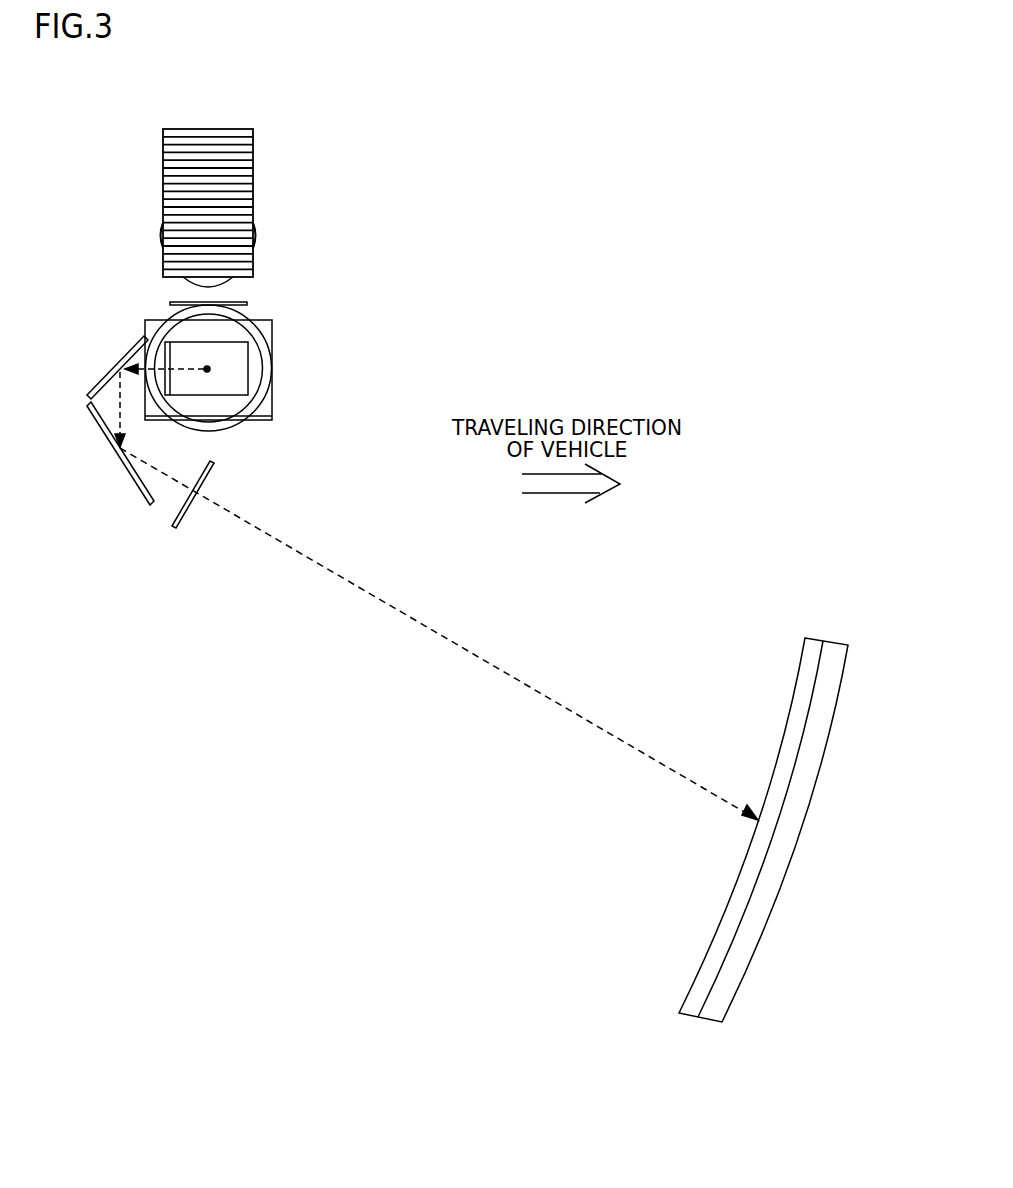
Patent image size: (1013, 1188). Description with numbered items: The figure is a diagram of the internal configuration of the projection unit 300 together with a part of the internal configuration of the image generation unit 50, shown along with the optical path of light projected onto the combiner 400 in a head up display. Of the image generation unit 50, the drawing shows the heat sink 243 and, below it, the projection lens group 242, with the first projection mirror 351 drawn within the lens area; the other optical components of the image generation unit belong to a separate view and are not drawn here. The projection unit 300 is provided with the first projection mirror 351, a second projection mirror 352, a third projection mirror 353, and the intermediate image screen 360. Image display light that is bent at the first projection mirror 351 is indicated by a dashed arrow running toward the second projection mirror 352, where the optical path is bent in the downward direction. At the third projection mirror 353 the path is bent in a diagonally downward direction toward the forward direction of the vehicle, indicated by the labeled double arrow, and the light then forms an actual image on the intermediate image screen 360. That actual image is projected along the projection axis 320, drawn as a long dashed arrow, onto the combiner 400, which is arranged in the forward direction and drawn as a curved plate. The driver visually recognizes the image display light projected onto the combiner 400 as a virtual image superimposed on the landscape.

The projection unit 300 is at (100, 278).
The image generation unit 50 is at (328, 130).
The heat sink 243 is at (248, 174).
The projection lens group 242 is at (264, 347).
The first projection mirror 351 is at (240, 375).
The second projection mirror 352 is at (113, 369).
The third projection mirror 353 is at (130, 481).
The intermediate image screen 360 is at (185, 512).
The projection axis 320 is at (402, 613).
The combiner 400 is at (836, 655).